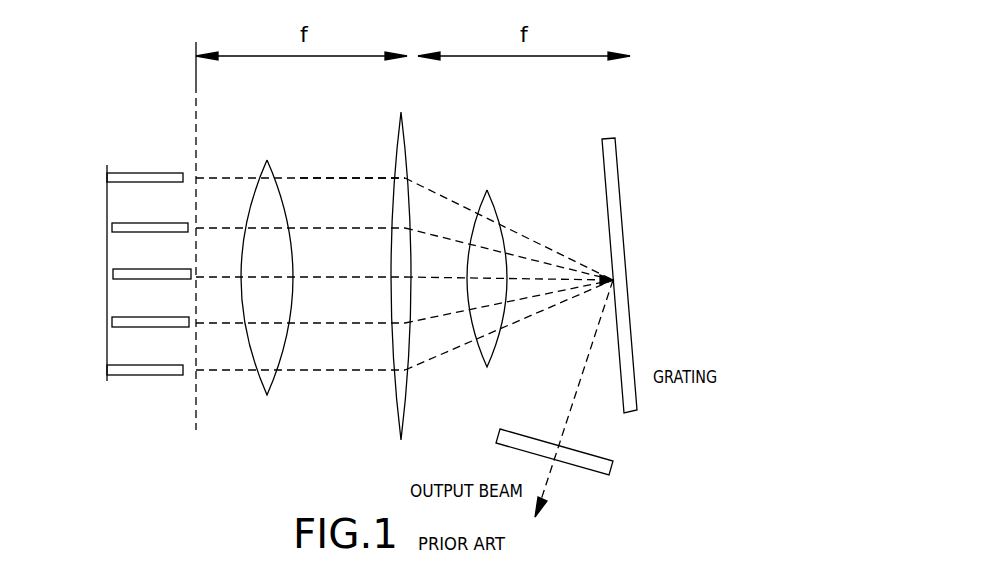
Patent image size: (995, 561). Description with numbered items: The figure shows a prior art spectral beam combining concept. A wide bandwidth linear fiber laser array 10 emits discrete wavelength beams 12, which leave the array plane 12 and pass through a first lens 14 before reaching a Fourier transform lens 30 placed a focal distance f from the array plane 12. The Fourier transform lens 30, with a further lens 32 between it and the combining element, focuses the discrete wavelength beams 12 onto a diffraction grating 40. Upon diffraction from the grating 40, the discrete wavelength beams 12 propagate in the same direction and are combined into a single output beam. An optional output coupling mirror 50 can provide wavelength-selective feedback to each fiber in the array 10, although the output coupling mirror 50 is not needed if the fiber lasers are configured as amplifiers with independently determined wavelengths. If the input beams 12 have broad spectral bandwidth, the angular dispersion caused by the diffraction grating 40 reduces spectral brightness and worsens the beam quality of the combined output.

The linear fiber laser array 10 is at (138, 150).
The discrete wavelength beams 12 is at (195, 85).
The first lens 14 is at (267, 160).
The Fourier transform lens 30 is at (401, 112).
The diffraction grating 40 is at (355, 187).
The third lens 32 is at (487, 190).
The output coupling mirror 50 is at (530, 437).